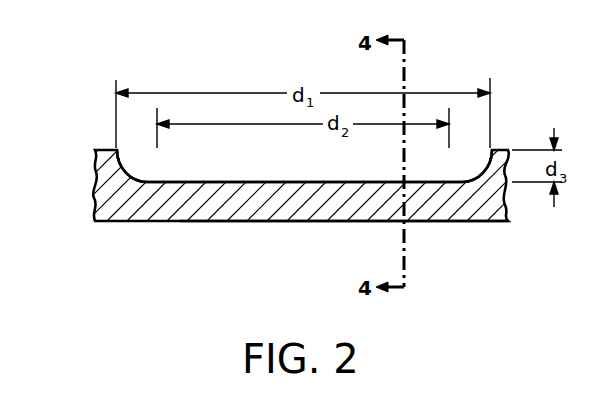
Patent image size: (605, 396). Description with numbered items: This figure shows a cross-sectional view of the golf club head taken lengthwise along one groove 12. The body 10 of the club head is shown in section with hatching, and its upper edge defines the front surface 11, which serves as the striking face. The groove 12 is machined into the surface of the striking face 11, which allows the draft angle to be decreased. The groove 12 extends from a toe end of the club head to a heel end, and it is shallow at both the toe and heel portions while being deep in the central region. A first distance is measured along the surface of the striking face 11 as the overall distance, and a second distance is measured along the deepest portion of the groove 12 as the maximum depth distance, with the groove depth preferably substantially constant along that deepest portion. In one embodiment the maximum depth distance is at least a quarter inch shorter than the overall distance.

The body 10 is at (100, 200).
The front surface 11 is at (107, 149).
The groove 12 is at (247, 183).